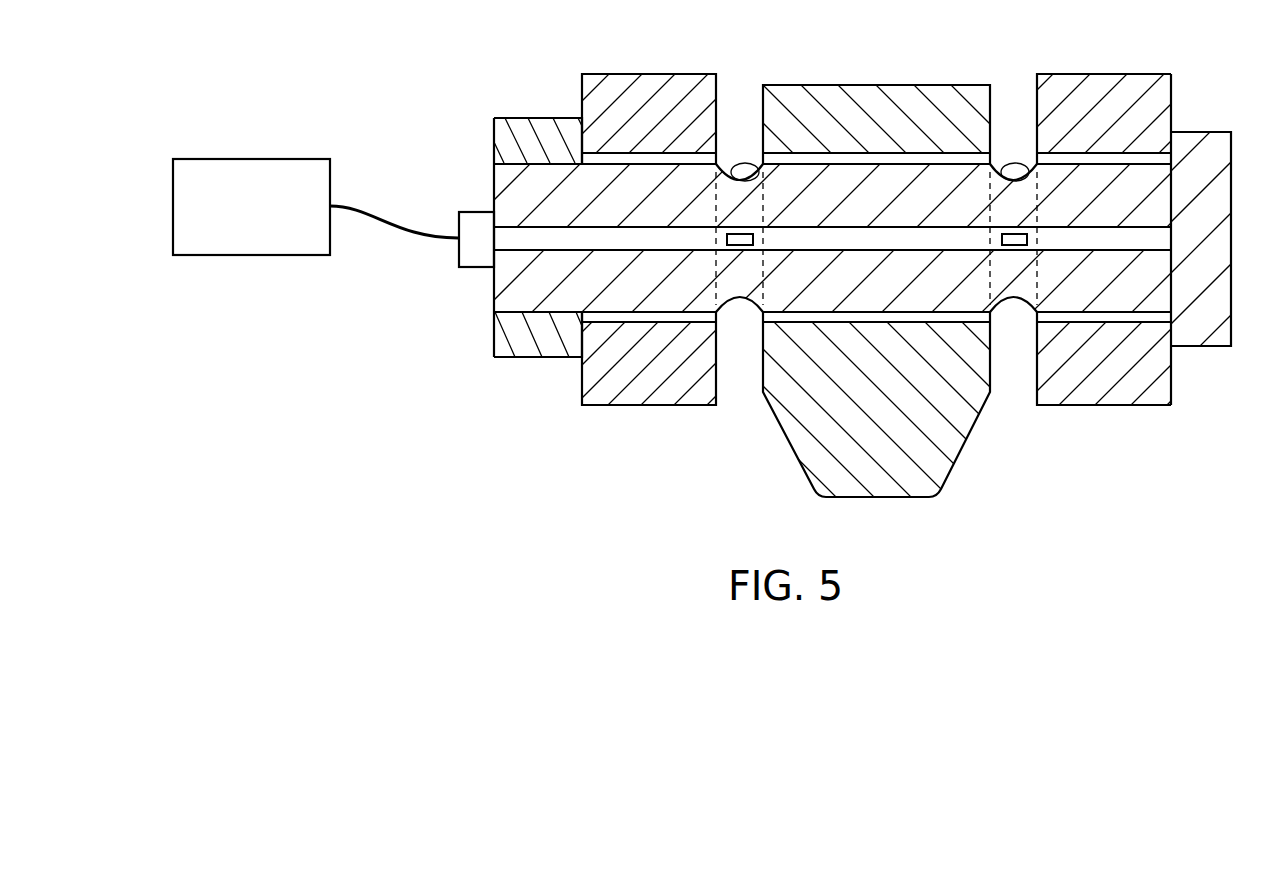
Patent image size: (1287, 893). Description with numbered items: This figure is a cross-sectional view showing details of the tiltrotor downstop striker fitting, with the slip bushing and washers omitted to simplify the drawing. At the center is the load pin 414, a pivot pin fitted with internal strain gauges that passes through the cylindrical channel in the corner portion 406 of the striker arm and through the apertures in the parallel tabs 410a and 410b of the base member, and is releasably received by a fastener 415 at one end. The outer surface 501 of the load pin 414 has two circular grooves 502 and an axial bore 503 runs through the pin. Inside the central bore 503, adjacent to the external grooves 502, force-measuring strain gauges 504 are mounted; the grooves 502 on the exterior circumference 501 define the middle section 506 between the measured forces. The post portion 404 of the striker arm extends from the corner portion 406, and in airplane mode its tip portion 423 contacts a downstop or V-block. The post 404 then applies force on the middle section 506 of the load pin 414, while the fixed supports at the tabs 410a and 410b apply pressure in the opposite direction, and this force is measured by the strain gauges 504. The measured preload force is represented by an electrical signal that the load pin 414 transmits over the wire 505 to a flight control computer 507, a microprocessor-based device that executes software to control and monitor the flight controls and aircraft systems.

The post portion 404 is at (827, 430).
The corner portion 406 is at (896, 92).
The tab 410a is at (645, 84).
The tab 410b is at (1100, 84).
The load pin 414 is at (1190, 138).
The fastener 415 is at (524, 126).
The tip portion 423 is at (885, 498).
The outer surface 501 is at (636, 163).
The circular grooves 502 is at (758, 178).
The axial bore 503 is at (920, 237).
The strain gauges 504 is at (754, 241).
The wire 505 is at (391, 226).
The middle section 506 is at (935, 296).
The flight control computer 507 is at (250, 158).